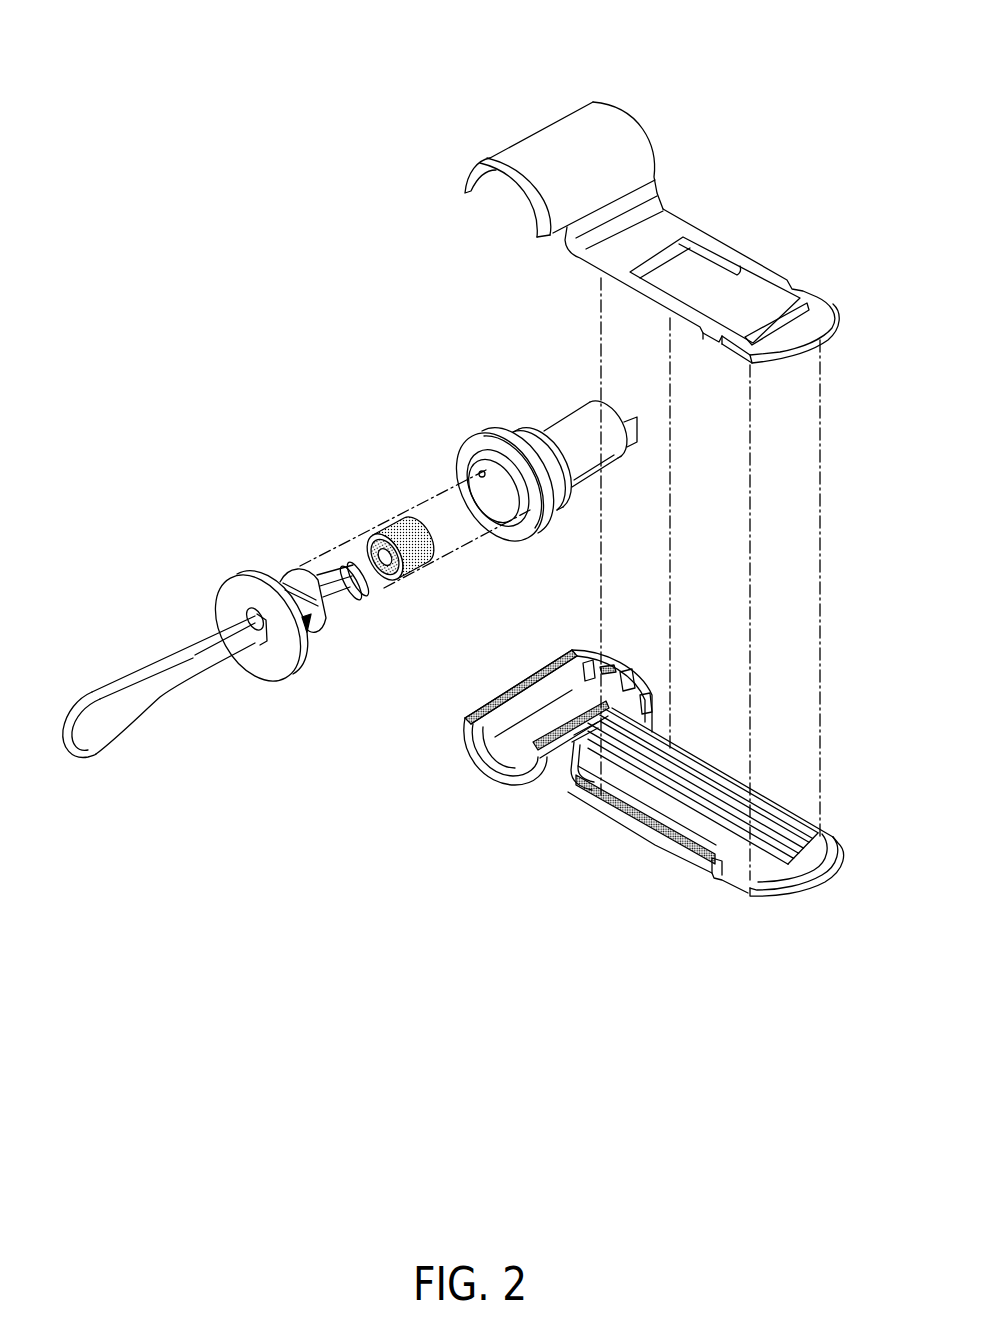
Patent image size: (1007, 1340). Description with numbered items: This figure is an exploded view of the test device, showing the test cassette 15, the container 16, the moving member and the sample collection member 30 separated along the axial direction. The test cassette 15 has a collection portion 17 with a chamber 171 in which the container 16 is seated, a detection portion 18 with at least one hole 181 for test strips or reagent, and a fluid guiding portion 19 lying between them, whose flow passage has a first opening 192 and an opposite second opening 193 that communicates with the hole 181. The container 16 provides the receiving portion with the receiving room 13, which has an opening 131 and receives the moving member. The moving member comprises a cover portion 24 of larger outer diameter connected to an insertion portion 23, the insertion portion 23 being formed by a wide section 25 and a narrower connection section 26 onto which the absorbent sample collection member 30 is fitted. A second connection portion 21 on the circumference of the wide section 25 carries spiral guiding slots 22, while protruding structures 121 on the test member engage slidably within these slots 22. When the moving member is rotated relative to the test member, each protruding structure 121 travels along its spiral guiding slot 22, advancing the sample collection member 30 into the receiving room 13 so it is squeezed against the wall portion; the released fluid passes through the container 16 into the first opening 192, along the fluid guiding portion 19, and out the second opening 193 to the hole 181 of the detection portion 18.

The test cassette 15 is at (540, 130).
The container 16 is at (538, 479).
The receiving room 13 is at (500, 508).
The protruding structure 121 is at (482, 470).
The opening 131 is at (496, 515).
The sample collection member 30 is at (414, 563).
The cover portion 24 is at (232, 578).
The second connection portion 21 is at (305, 642).
The spiral guiding slot 22 is at (320, 628).
The insertion portion 23 is at (310, 486).
The wide section 25 is at (281, 578).
The connection section 26 is at (314, 578).
The collection portion 17 is at (544, 742).
The chamber 171 is at (507, 747).
The first opening 192 is at (573, 652).
The fluid guiding portion 19 is at (573, 742).
The second opening 193 is at (589, 725).
The detection portion 18 is at (698, 875).
The hole 181 is at (708, 870).